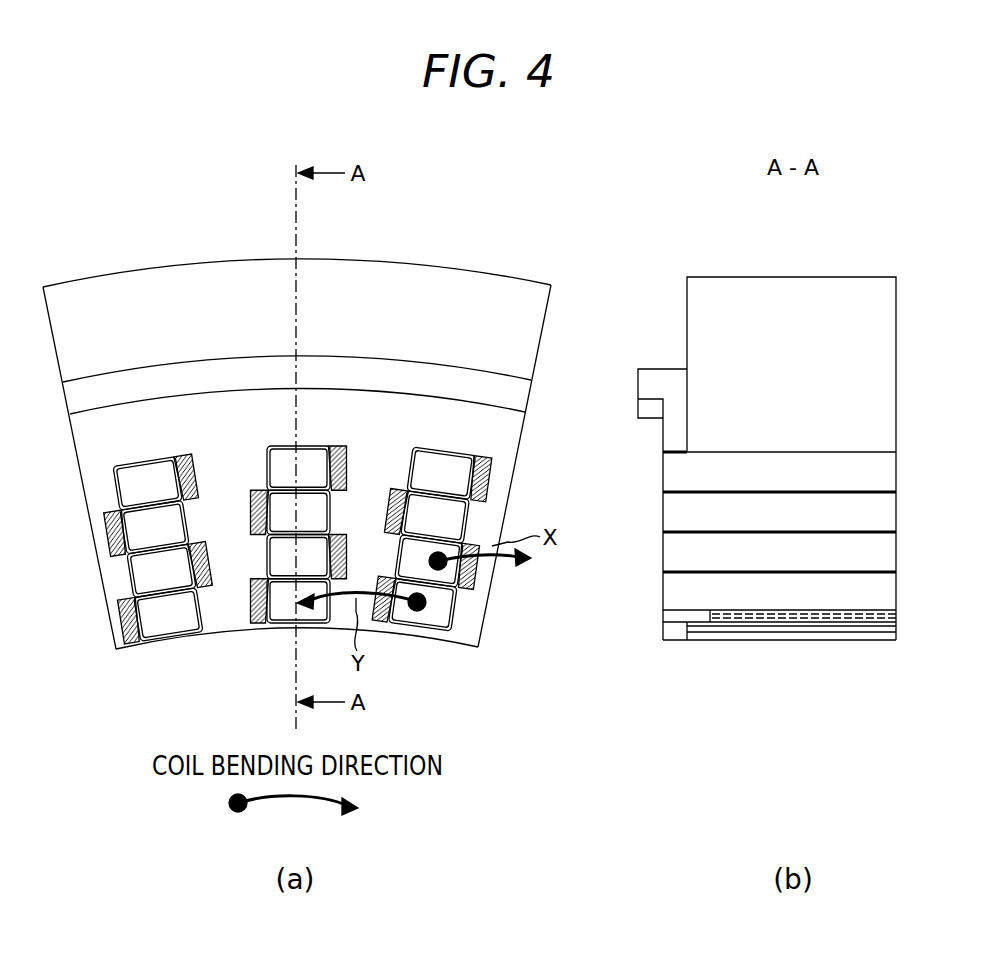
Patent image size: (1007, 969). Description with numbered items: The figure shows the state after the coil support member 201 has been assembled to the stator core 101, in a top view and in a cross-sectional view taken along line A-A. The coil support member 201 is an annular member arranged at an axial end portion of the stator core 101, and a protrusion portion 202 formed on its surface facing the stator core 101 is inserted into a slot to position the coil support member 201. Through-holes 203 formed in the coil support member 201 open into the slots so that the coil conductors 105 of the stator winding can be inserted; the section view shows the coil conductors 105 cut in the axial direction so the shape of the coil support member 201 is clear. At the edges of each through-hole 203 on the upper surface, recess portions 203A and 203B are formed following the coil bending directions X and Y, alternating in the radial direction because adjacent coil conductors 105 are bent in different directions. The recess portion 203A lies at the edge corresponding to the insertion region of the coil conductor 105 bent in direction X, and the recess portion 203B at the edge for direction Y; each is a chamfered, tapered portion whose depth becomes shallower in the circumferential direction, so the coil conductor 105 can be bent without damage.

The stator core 101 is at (424, 293).
The coil conductor 105 is at (453, 470).
The coil support member 201 is at (100, 447).
The protrusion portion 202 is at (673, 630).
The through-hole 203 is at (298, 577).
The recess portion 203A is at (474, 523).
The recess portion 203B is at (123, 577).